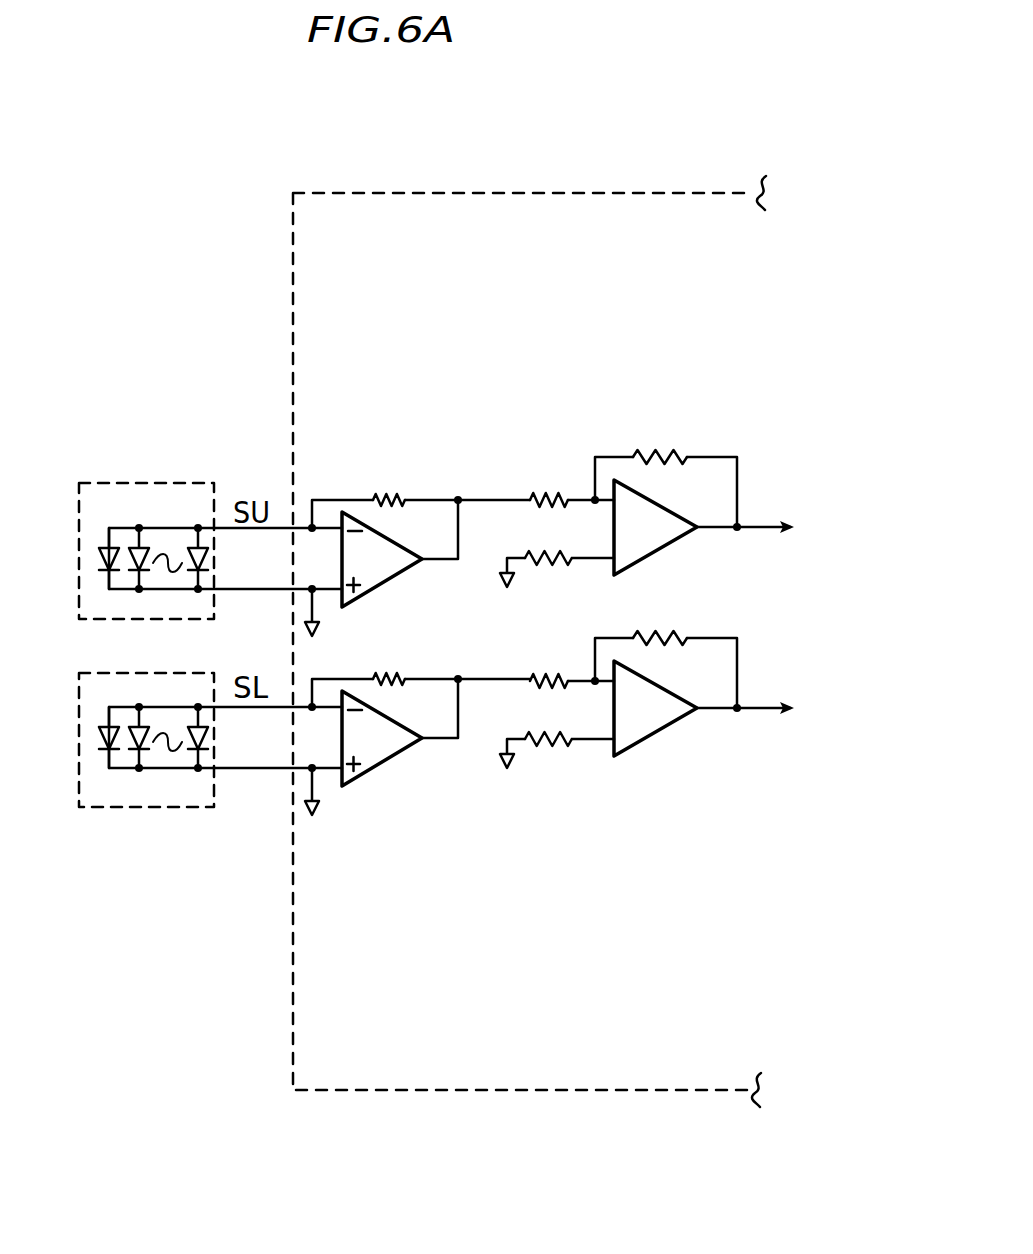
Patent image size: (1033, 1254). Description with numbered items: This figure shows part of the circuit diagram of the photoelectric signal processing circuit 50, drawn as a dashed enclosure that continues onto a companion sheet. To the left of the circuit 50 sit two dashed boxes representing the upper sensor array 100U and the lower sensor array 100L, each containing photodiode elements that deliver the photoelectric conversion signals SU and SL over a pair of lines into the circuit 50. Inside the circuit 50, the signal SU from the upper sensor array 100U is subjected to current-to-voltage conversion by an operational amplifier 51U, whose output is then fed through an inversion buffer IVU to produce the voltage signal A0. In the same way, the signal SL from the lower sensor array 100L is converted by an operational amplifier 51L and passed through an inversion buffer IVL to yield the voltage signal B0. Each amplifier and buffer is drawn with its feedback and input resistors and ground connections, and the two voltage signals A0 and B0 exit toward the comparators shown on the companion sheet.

The photoelectric signal processing circuit 50 is at (555, 193).
The upper sensor array 100U is at (128, 482).
The lower sensor array 100L is at (123, 808).
The operational amplifier 51U is at (402, 572).
The operational amplifier 51L is at (390, 762).
The inversion buffer IVU is at (643, 568).
The inversion buffer IVL is at (641, 750).